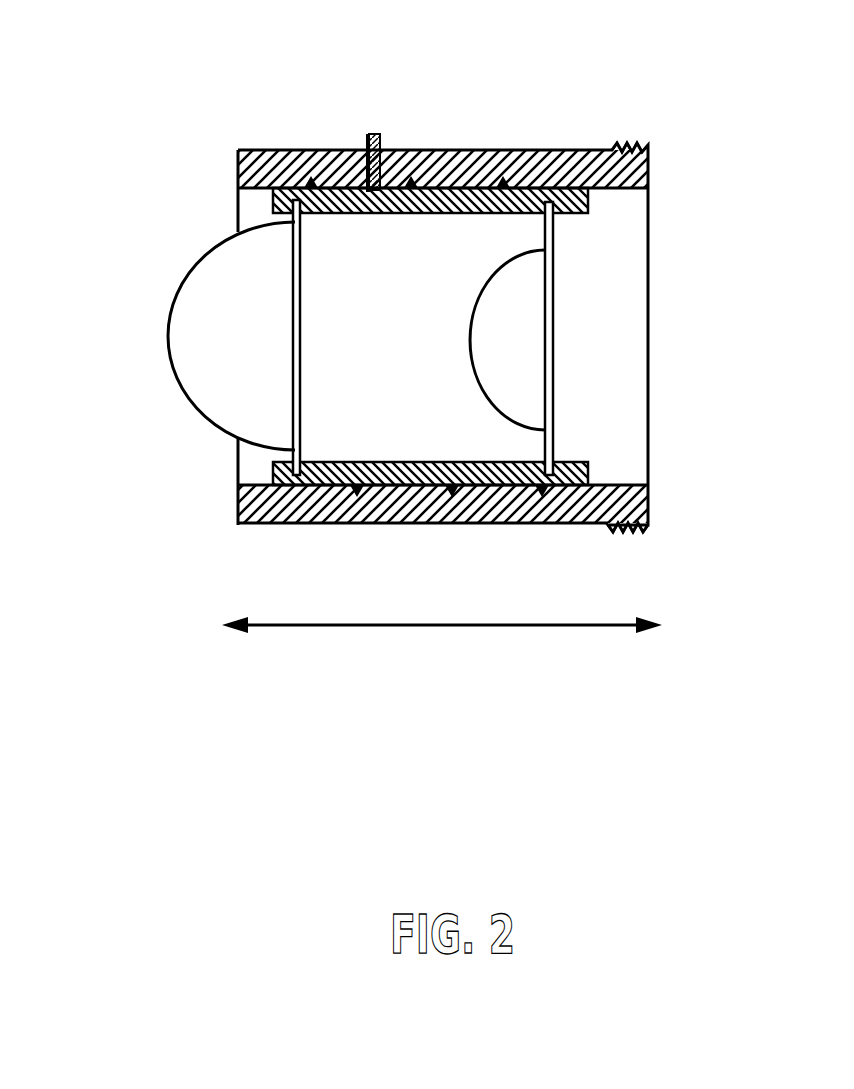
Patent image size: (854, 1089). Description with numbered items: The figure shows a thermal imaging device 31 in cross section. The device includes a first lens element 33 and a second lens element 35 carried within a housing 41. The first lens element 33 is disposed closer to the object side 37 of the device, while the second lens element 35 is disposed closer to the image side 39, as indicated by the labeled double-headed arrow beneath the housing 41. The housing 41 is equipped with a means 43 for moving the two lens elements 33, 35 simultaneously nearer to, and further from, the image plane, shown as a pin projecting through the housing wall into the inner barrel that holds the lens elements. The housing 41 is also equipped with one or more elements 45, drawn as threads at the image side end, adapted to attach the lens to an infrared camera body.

The thermal imaging device 31 is at (185, 93).
The first lens element 33 is at (168, 325).
The second lens element 35 is at (470, 333).
The object side 37 is at (162, 717).
The image side 39 is at (736, 717).
The housing 41 is at (502, 152).
The means for moving the two lens elements 43 is at (368, 135).
The elements adapted to attach the lens to an infrared camera body 45 is at (623, 150).